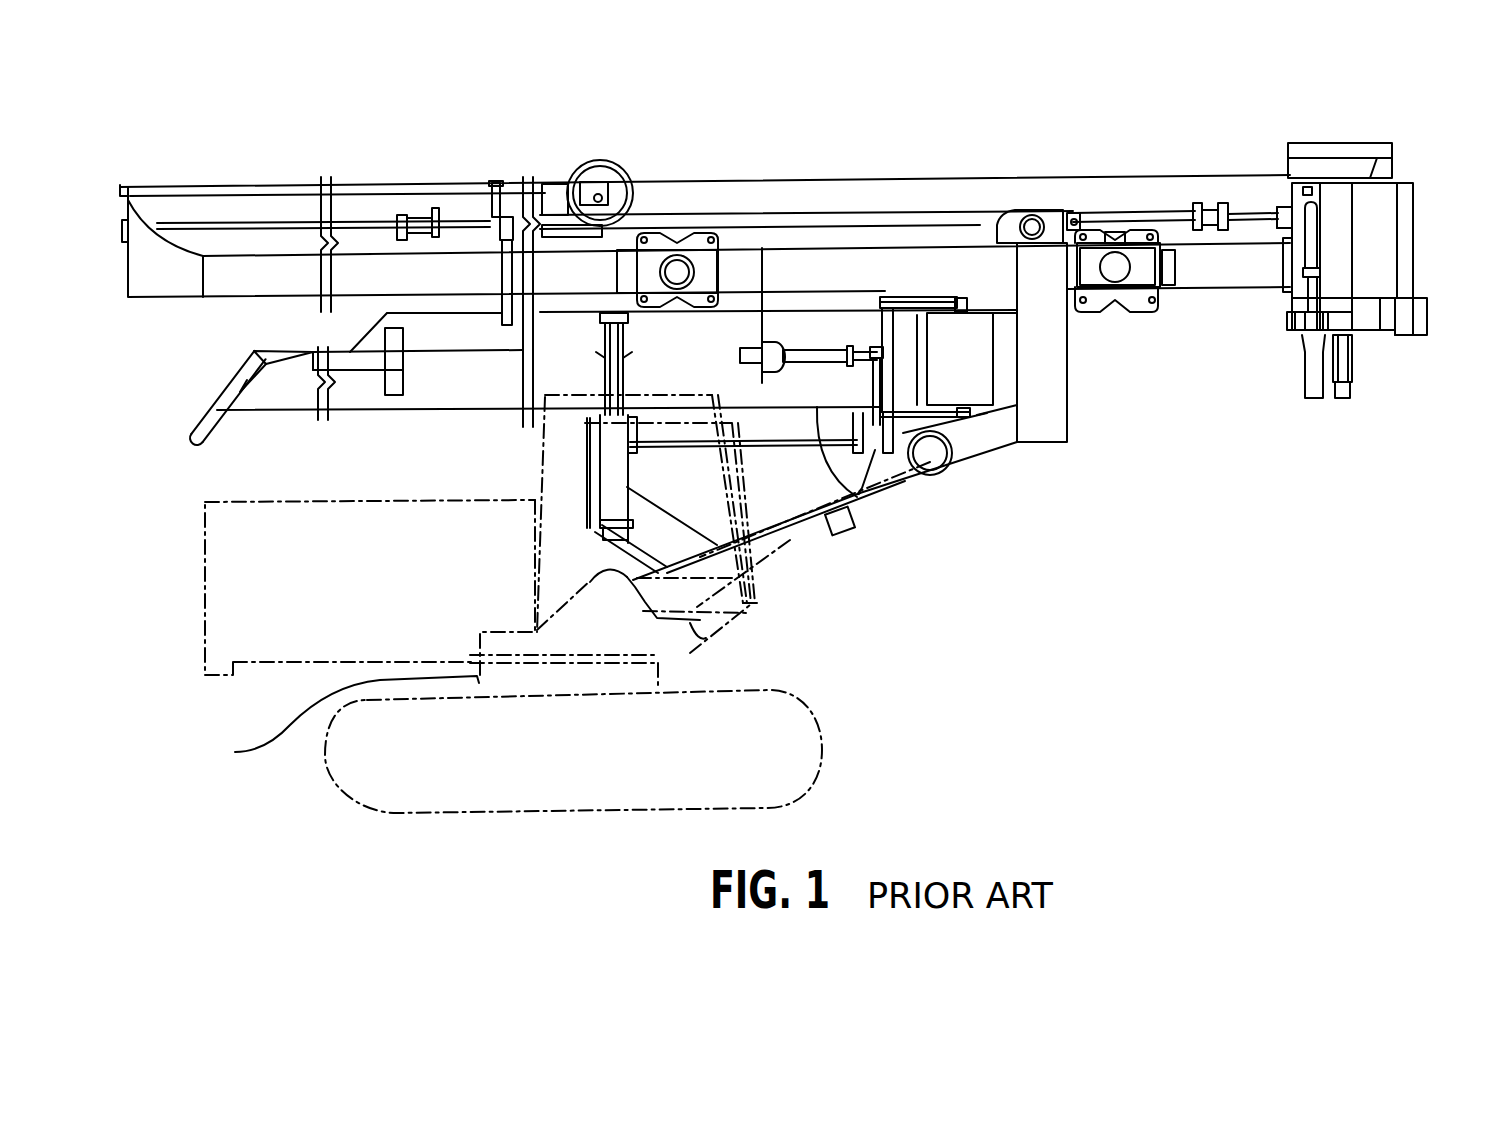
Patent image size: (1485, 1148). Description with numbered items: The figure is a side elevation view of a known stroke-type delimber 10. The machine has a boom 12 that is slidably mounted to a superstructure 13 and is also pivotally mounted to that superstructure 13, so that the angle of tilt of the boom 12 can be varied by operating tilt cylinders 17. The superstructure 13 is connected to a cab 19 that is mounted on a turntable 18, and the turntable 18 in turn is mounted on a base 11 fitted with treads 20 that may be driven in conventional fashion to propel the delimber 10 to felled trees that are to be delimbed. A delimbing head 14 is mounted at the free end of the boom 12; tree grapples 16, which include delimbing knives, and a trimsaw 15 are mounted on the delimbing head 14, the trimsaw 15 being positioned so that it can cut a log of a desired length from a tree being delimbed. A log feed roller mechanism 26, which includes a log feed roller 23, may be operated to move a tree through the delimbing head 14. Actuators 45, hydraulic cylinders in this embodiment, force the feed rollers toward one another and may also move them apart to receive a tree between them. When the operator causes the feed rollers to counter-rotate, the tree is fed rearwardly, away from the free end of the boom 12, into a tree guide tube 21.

The stroke-type delimber 10 is at (1115, 158).
The base 11 is at (252, 750).
The boom 12 is at (1223, 273).
The superstructure 13 is at (192, 352).
The delimbing head 14 is at (1410, 361).
The trimsaw 15 is at (1403, 243).
The tree grapples 16 is at (1313, 372).
The tilt cylinders 17 is at (807, 557).
The turntable 18 is at (667, 660).
The cab 19 is at (760, 607).
The treads 20 is at (822, 738).
The tree guide tube 21 is at (868, 512).
The log feed roller 23 is at (977, 375).
The log feed roller mechanism 26 is at (1012, 392).
The actuators 45 is at (817, 350).